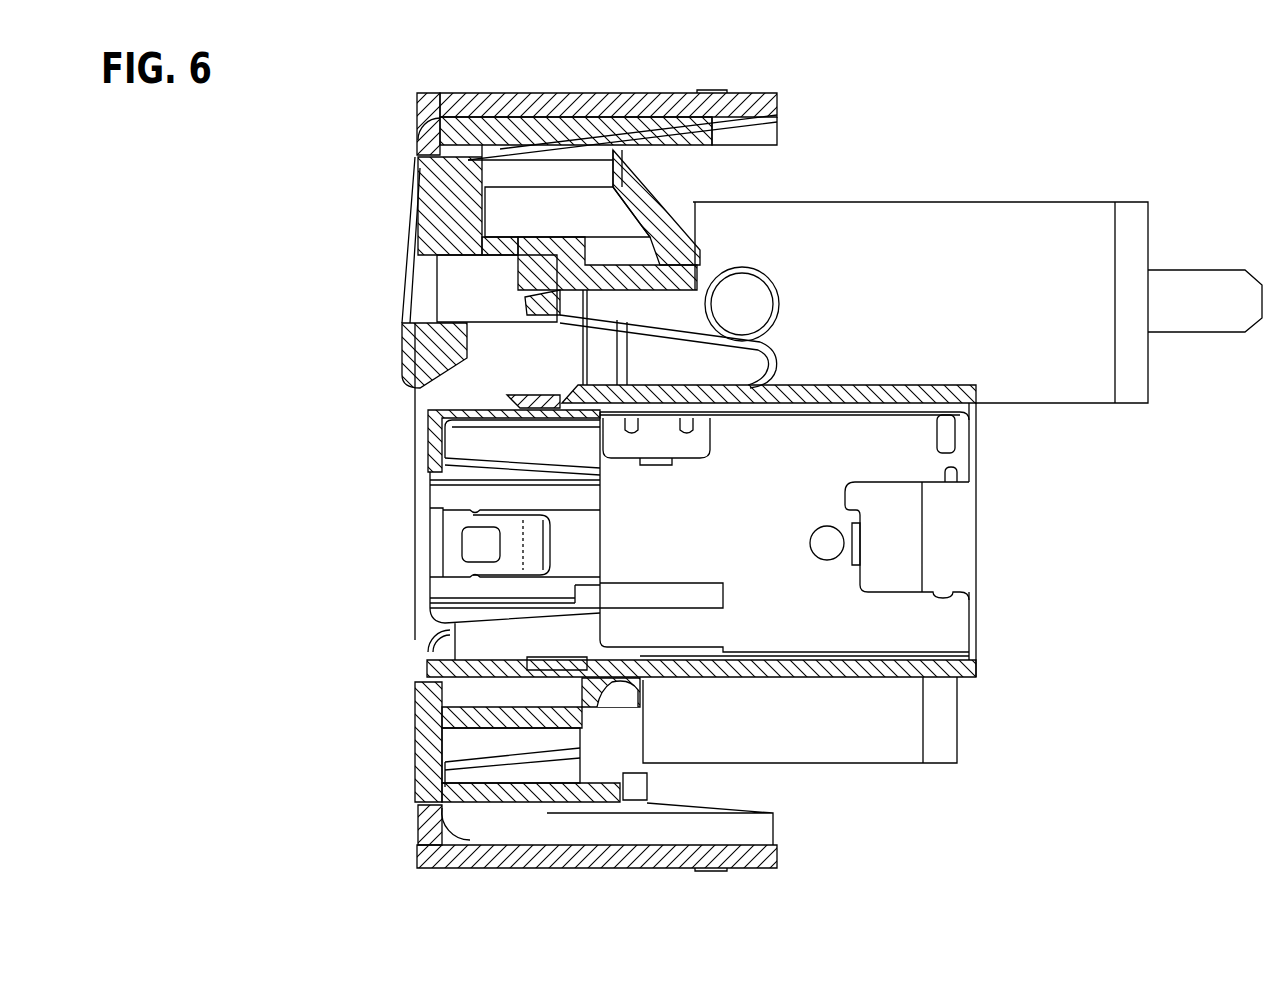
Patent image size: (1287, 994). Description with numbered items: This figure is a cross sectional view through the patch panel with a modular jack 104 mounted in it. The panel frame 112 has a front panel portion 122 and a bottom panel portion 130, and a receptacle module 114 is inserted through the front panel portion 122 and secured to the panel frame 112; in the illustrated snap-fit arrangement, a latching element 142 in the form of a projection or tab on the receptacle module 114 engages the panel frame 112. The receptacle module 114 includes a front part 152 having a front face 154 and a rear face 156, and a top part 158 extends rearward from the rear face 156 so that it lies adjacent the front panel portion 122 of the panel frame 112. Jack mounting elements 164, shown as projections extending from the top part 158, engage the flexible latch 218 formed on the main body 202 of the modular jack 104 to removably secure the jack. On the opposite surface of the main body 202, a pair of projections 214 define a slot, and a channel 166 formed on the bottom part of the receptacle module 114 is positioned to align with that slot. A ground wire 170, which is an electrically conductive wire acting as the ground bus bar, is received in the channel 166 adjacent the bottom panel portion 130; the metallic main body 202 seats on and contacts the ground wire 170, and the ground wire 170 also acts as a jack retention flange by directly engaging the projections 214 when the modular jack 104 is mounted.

The modular jack 104 is at (930, 458).
The panel frame 112 is at (448, 95).
The receptacle module 114 is at (410, 166).
The front panel portion 122 is at (636, 104).
The bottom panel portion 130 is at (628, 866).
The latching element 142 is at (718, 90).
The front part 152 is at (415, 212).
The front face 154 is at (398, 238).
The rear face 156 is at (490, 211).
The top part 158 is at (700, 122).
The jack mounting element 164 is at (580, 300).
The channel 166 is at (582, 680).
The ground wire 170 is at (568, 695).
The main body 202 is at (678, 668).
The projections 214 is at (535, 680).
The flexible latch 218 is at (685, 328).